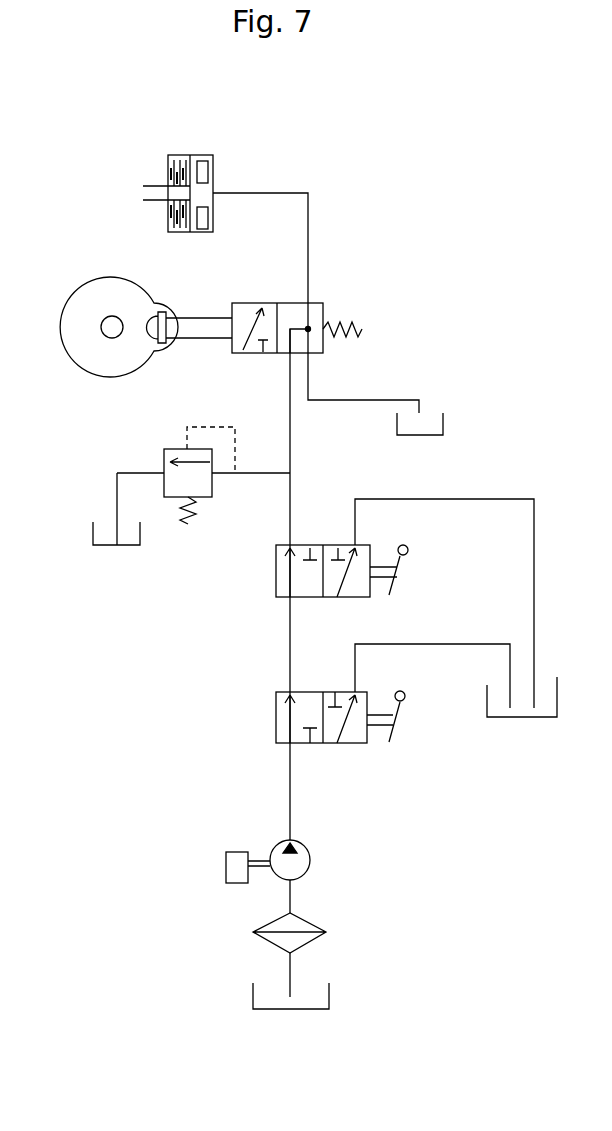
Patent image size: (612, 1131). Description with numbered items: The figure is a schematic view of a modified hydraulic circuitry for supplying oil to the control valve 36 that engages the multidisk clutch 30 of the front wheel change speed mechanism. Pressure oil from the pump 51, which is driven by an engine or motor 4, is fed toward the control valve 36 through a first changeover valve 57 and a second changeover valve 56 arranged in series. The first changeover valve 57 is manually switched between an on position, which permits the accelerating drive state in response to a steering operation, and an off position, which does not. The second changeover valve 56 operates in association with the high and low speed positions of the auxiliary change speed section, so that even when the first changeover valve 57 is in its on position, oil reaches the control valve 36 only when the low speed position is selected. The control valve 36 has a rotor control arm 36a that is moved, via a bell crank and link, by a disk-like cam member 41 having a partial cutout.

The multidisk clutch 30 is at (201, 155).
The control valve 36 is at (242, 302).
The rotor control arm 36a is at (202, 339).
The cam member 41 is at (102, 376).
The second changeover valve 56 is at (276, 563).
The first changeover valve 57 is at (276, 712).
The pump 51 is at (310, 860).
The motor 4 is at (232, 880).